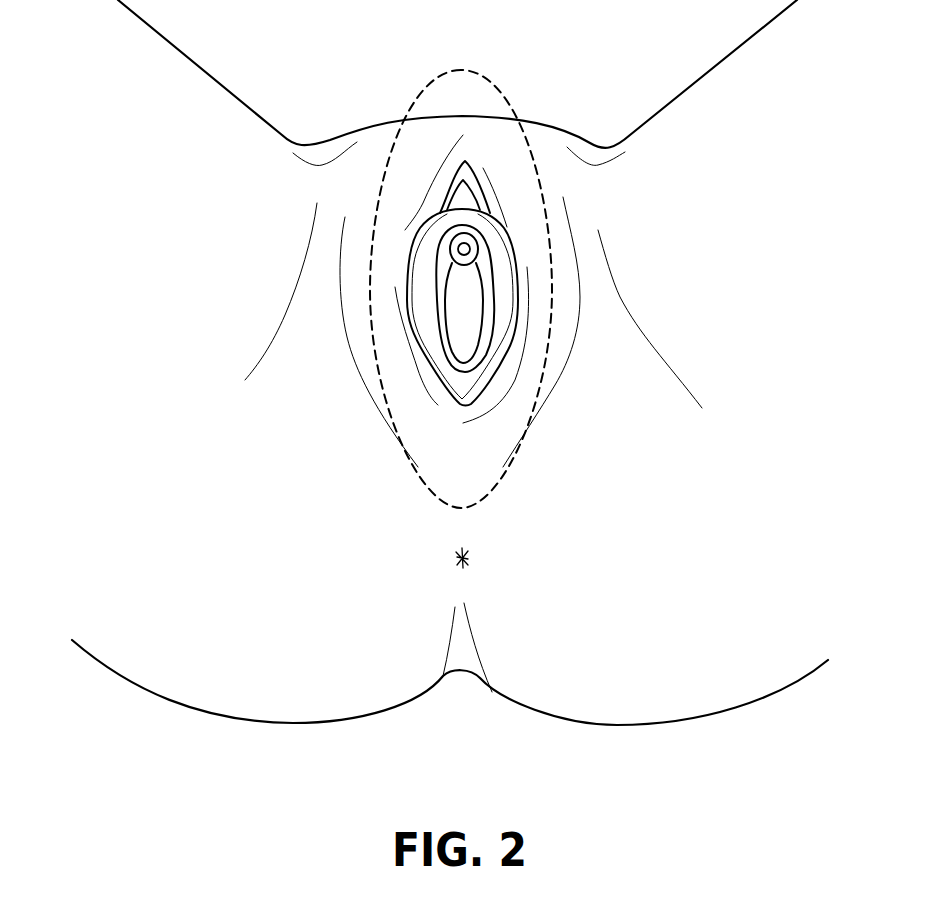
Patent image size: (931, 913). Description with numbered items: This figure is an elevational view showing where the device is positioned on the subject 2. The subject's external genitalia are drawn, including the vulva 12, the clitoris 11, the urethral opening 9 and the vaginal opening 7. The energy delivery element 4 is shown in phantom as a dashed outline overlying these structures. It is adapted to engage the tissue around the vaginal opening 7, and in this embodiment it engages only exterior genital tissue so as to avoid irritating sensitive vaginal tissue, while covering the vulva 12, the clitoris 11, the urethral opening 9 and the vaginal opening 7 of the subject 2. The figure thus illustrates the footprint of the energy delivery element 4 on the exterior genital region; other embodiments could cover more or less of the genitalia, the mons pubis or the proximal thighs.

The subject 2 is at (208, 128).
The energy delivery element 4 is at (373, 347).
The vaginal opening 7 is at (470, 312).
The urethral opening 9 is at (472, 250).
The clitoris 11 is at (465, 197).
The vulva 12 is at (427, 257).